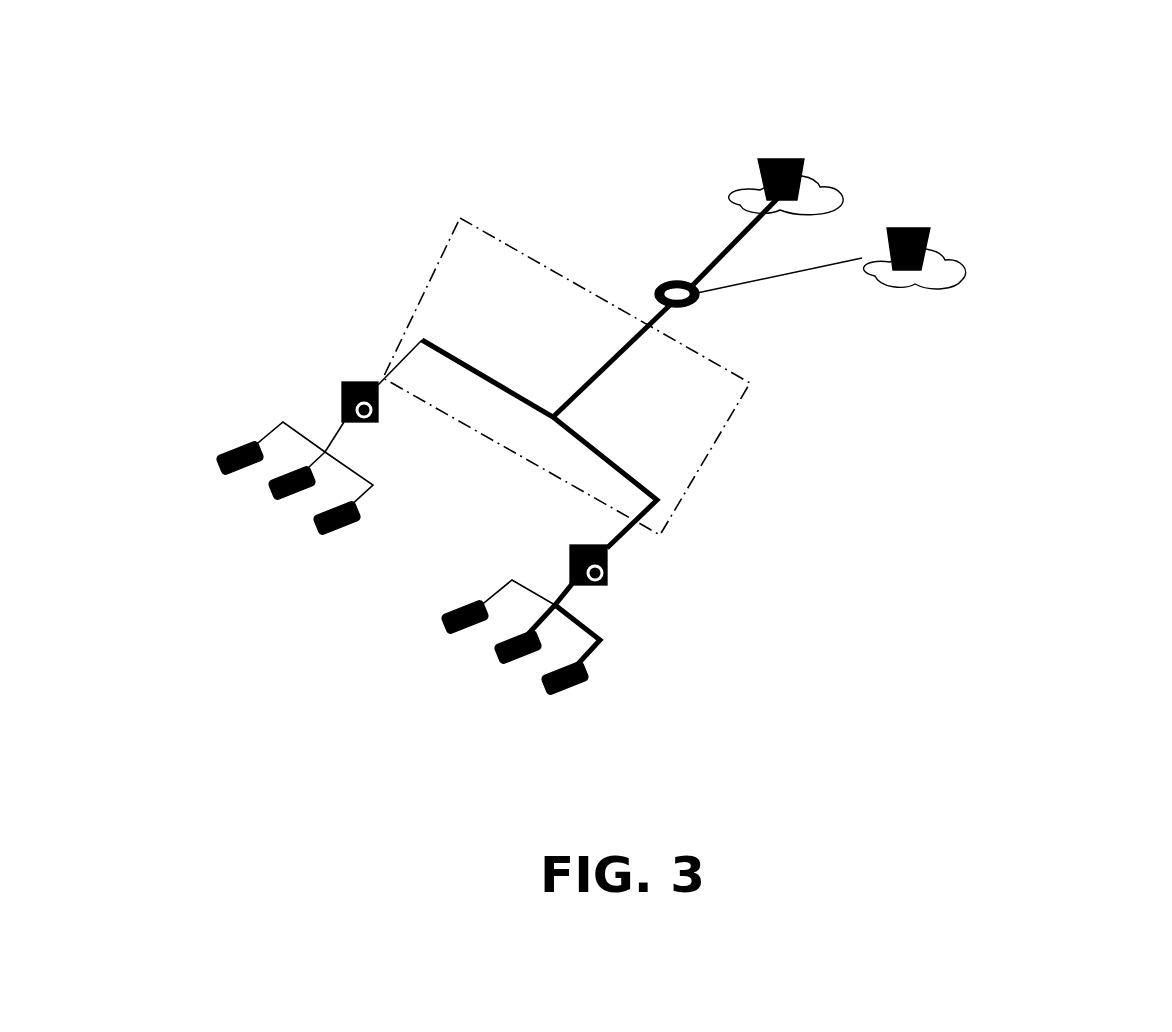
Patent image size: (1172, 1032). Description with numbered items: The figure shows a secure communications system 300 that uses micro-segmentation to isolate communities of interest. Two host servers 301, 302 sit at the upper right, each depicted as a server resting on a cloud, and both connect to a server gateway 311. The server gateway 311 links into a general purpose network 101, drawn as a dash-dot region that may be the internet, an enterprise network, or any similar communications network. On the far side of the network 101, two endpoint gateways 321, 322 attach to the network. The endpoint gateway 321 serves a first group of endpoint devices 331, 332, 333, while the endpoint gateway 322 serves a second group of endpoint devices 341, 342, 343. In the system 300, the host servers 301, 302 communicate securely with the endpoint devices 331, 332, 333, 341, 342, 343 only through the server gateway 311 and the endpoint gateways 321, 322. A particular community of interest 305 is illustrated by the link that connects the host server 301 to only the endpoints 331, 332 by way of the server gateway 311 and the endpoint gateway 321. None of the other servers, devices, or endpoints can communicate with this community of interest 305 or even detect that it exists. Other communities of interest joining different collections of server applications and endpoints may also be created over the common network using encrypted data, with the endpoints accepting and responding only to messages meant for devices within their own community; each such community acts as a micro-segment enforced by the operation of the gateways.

The system 300 is at (656, 400).
The host server 301 is at (816, 167).
The host server 302 is at (955, 243).
The server gateway 311 is at (617, 261).
The general purpose network 101 is at (607, 376).
The endpoint gateway 321 is at (647, 560).
The endpoint gateway 322 is at (325, 371).
The community of interest 305 is at (637, 639).
The endpoint device 331 is at (607, 704).
The endpoint device 332 is at (478, 684).
The endpoint device 333 is at (429, 652).
The endpoint device 341 is at (298, 555).
The endpoint device 342 is at (251, 520).
The endpoint device 343 is at (203, 495).